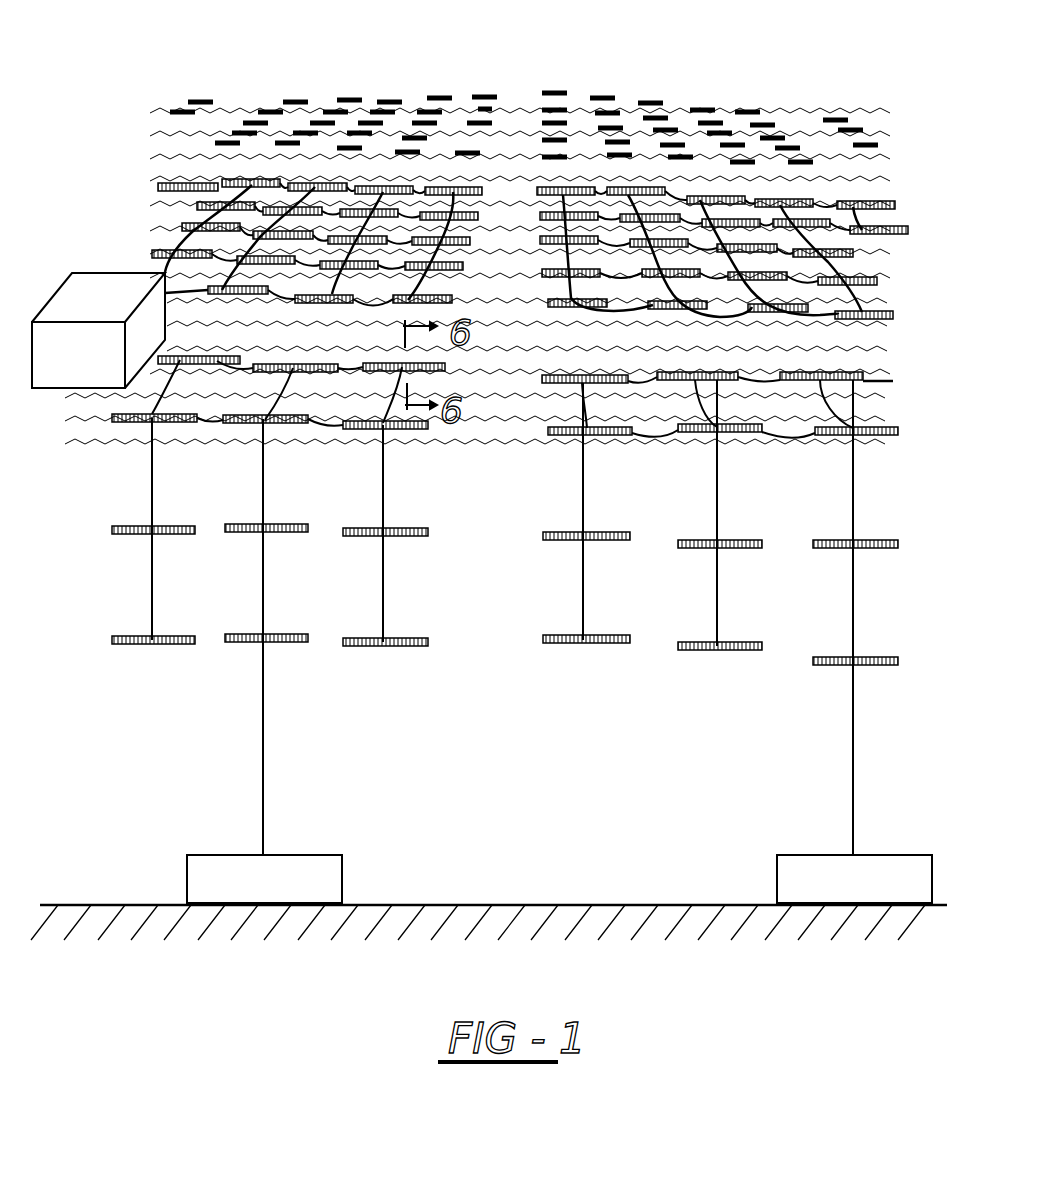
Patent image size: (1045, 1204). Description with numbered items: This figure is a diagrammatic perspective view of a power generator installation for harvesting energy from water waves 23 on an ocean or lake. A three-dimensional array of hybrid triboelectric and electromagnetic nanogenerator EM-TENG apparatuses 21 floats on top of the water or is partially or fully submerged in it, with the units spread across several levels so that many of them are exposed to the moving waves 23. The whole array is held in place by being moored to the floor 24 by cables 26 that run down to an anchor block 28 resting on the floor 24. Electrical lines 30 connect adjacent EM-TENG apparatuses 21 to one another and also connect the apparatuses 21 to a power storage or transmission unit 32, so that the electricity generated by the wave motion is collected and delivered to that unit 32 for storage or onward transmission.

The EM-TENG apparatus 21 is at (152, 418).
The water waves 23 is at (802, 107).
The floor 24 is at (547, 905).
The cables 26 is at (263, 747).
The anchor block 28 is at (218, 853).
The electrical lines 30 is at (216, 424).
The power storage or transmission unit 32 is at (100, 370).